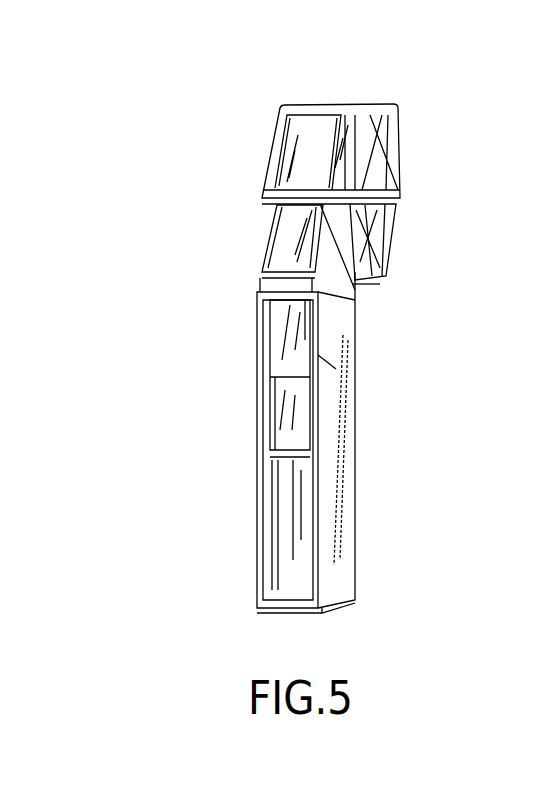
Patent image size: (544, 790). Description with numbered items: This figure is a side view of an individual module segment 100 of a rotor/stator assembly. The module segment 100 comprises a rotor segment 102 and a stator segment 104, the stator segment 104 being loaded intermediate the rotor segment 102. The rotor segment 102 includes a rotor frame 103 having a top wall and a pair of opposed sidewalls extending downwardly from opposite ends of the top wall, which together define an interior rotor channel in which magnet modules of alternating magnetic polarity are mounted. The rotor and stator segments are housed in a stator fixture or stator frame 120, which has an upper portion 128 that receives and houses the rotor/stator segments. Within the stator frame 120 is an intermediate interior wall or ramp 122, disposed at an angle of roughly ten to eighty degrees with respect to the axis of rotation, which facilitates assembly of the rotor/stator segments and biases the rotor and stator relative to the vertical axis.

The module segment 100 is at (222, 401).
The rotor segment 102 is at (312, 122).
The rotor frame 103 is at (400, 206).
The stator segment 104 is at (330, 378).
The stator frame 120 is at (342, 519).
The ramp 122 is at (257, 422).
The upper portion 128 is at (267, 241).